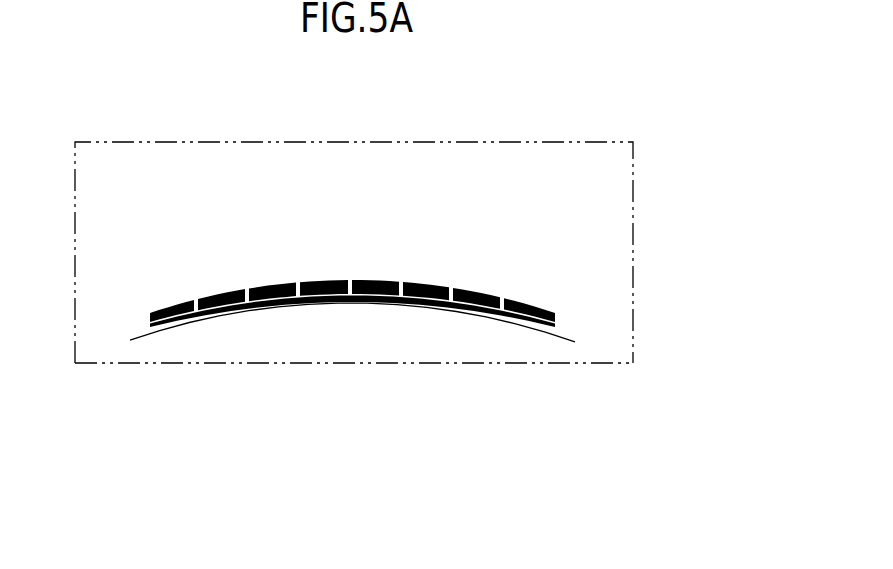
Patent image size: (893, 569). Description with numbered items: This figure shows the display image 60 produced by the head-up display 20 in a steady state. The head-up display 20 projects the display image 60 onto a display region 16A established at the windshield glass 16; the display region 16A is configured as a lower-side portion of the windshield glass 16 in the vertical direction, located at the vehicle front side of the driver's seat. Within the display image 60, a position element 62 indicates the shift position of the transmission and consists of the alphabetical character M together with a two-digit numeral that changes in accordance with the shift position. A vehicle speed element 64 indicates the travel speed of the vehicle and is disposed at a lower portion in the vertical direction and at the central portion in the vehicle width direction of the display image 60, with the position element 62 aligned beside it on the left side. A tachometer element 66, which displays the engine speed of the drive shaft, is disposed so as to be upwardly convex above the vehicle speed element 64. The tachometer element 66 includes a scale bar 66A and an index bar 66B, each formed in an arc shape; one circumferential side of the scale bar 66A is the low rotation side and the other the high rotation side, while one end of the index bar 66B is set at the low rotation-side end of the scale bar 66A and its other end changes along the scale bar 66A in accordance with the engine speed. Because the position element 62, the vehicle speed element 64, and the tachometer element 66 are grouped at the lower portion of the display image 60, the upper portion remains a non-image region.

The head-up display 20 is at (668, 133).
The display image 60 is at (512, 138).
The windshield glass 16 is at (553, 408).
The display region 16A is at (620, 363).
The position element 62 is at (234, 368).
The vehicle speed element 64 is at (345, 368).
The tachometer element 66 is at (190, 440).
The scale bar 66A is at (150, 322).
The index bar 66B is at (175, 326).